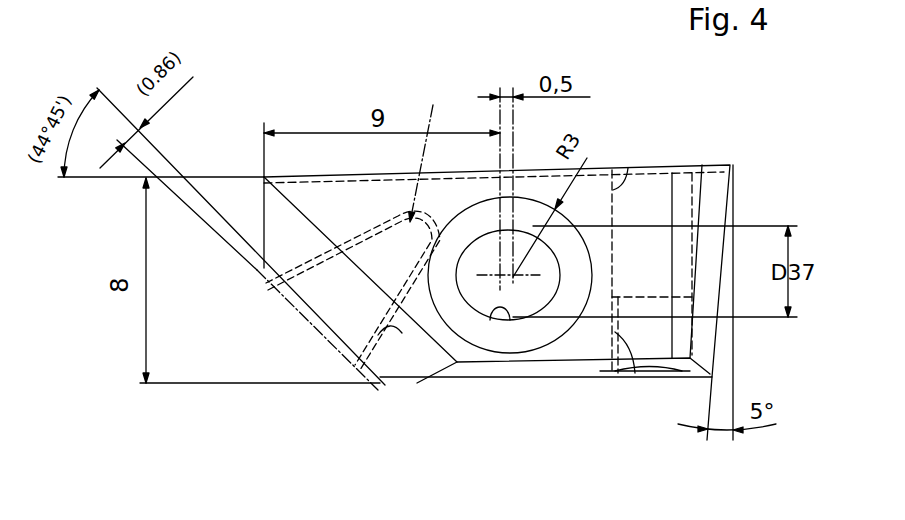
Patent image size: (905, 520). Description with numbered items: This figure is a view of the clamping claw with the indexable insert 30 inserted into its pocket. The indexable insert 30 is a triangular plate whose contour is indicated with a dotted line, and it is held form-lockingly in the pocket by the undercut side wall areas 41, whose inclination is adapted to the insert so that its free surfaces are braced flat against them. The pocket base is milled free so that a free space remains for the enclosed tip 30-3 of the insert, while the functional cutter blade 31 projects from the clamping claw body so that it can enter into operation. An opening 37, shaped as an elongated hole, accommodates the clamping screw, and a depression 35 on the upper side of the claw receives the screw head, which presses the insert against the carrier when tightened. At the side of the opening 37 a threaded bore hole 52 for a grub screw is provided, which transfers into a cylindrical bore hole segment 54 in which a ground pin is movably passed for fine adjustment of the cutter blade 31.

The indexable insert 30 is at (323, 330).
The enclosed tip of the indexable insert 30-3 is at (428, 150).
The functional cutter blade 31 is at (297, 310).
The depression 35 is at (473, 327).
The opening 37 is at (513, 321).
The undercut side wall areas 41 is at (266, 284).
The threaded bore hole 52 is at (633, 376).
The cylindrical bore hole segment 54 is at (629, 168).